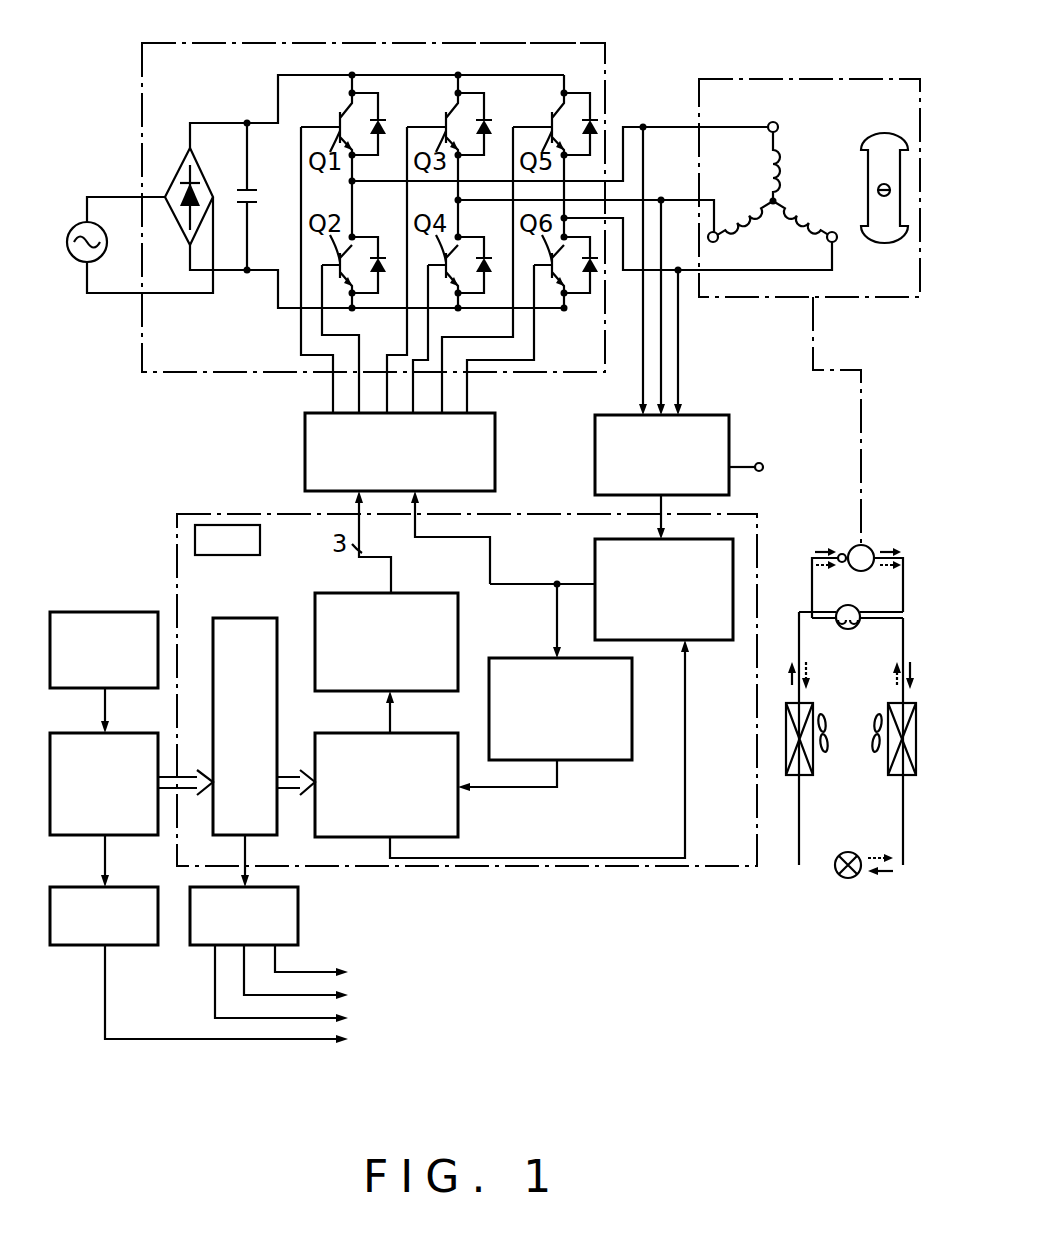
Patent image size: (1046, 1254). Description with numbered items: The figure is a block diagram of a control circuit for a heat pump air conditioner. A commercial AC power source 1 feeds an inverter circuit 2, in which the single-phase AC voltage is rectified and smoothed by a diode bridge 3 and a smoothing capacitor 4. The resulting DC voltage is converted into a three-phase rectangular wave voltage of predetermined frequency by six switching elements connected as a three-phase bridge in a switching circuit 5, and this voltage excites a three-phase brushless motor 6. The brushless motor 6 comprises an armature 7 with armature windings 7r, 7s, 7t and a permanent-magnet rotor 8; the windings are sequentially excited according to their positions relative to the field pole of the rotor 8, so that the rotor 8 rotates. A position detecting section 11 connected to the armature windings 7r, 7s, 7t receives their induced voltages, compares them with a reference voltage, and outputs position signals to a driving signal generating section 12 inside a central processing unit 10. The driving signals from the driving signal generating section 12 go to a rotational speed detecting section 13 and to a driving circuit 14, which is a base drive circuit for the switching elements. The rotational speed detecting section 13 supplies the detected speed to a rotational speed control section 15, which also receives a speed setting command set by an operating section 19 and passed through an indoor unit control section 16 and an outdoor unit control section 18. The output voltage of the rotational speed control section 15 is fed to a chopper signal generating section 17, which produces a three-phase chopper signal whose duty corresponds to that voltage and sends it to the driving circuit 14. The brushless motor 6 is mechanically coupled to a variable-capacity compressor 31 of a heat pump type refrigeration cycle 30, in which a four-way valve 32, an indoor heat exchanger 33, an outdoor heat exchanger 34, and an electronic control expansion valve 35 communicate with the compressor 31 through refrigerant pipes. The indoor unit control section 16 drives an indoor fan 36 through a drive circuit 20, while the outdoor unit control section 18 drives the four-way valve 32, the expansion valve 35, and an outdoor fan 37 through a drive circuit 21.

The commercial AC power source 1 is at (106, 252).
The inverter circuit 2 is at (346, 45).
The diode bridge 3 is at (180, 164).
The smoothing capacitor 4 is at (255, 206).
The switching circuit 5 is at (540, 46).
The three-phase brushless motor 6 is at (747, 79).
The armature 7 is at (774, 187).
The armature winding 7r is at (783, 172).
The armature winding 7s is at (810, 220).
The armature winding 7t is at (752, 224).
The rotor 8 is at (886, 133).
The central processing unit 10 is at (207, 512).
The position detecting section 11 is at (729, 428).
The driving signal generating section 12 is at (595, 559).
The rotational speed detecting section 13 is at (632, 703).
The driving circuit 14 is at (305, 460).
The rotational speed control section 15 is at (458, 812).
The indoor unit control section 16 is at (130, 835).
The chopper signal generating section 17 is at (458, 612).
The outdoor unit control section 18 is at (245, 618).
The operating section 19 is at (100, 612).
The drive circuit 20 is at (138, 945).
The drive circuit 21 is at (298, 912).
The refrigeration cycle 30 is at (797, 612).
The compressor 31 is at (869, 548).
The four-way valve 32 is at (848, 630).
The indoor heat exchanger 33 is at (813, 775).
The outdoor heat exchanger 34 is at (888, 775).
The electronic control expansion valve 35 is at (848, 878).
The indoor fan 36 is at (826, 726).
The outdoor fan 37 is at (875, 742).